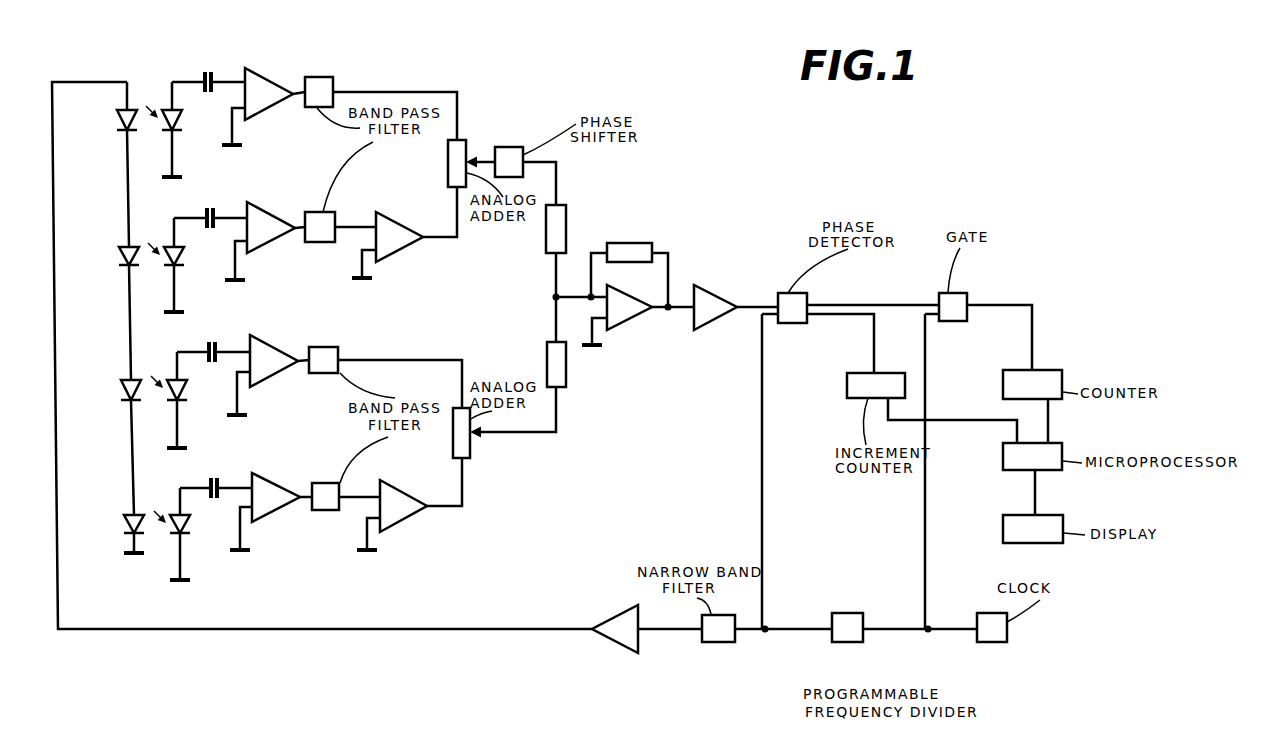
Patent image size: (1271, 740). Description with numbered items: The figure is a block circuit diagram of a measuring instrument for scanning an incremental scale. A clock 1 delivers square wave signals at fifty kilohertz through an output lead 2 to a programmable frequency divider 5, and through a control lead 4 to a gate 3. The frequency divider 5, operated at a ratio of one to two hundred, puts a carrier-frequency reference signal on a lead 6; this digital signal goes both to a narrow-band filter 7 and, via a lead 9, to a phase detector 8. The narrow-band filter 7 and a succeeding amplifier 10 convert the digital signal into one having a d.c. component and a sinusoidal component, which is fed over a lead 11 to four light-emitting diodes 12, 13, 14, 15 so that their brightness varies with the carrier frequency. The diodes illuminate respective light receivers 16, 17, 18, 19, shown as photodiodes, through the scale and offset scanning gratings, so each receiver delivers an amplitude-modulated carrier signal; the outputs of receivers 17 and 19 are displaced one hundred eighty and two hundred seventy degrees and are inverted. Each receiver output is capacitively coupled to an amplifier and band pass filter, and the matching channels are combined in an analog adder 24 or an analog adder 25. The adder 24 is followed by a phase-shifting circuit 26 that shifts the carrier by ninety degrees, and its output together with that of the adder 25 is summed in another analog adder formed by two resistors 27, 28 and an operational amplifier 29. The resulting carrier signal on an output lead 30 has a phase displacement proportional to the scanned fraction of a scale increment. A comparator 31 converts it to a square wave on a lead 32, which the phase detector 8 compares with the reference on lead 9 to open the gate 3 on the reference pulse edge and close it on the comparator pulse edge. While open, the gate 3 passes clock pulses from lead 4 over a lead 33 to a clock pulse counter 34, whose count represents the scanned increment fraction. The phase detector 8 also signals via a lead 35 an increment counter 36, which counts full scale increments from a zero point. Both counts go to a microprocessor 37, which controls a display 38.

The clock 1 is at (995, 643).
The output lead 2 is at (953, 625).
The gate 3 is at (965, 293).
The control lead 4 is at (929, 490).
The programmable frequency divider 5 is at (845, 643).
The lead 6 is at (807, 625).
The narrow-band filter 7 is at (718, 643).
The phase detector 8 is at (805, 293).
The lead 9 is at (764, 458).
The amplifier 10 is at (619, 612).
The lead 11 is at (305, 632).
The light-emitting diode 12 is at (119, 130).
The light-emitting diode 13 is at (121, 265).
The light-emitting diode 14 is at (123, 400).
The light-emitting diode 15 is at (126, 533).
The light receiver 16 is at (180, 124).
The light receiver 17 is at (182, 258).
The light receiver 18 is at (186, 392).
The light receiver 19 is at (190, 527).
The analog adder 24 is at (468, 158).
The analog adder 25 is at (472, 445).
The phase-shifting circuit 26 is at (508, 146).
The resistor 27 is at (568, 213).
The resistor 28 is at (572, 365).
The operational amplifier 29 is at (615, 326).
The output lead 30 is at (680, 300).
The comparator 31 is at (725, 300).
The lead 32 is at (757, 308).
The lead 33 is at (1034, 330).
The clock pulse counter 34 is at (1065, 381).
The lead 35 is at (874, 348).
The increment counter 36 is at (845, 388).
The microprocessor 37 is at (1065, 453).
The display 38 is at (1065, 518).